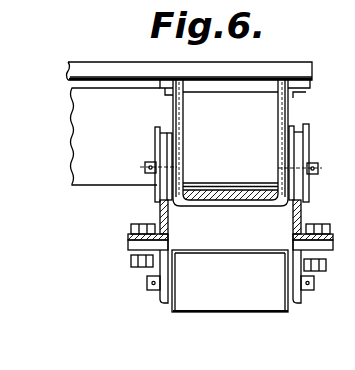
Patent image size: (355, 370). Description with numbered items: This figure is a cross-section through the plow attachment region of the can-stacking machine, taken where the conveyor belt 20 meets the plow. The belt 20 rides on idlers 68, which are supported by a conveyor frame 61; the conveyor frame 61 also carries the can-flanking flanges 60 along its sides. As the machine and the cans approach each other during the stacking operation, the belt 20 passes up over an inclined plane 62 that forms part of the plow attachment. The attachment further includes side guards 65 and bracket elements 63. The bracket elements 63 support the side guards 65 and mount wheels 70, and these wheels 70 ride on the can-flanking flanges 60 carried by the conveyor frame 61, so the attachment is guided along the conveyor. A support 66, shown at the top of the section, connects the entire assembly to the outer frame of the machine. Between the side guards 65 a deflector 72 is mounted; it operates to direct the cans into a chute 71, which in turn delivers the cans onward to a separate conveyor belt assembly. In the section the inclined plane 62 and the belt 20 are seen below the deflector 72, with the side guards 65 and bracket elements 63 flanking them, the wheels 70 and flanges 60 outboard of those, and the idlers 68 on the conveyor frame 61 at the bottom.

The support 66 is at (153, 69).
The side guards 65 is at (173, 108).
The bracket elements 63 is at (288, 107).
The deflector 72 is at (230, 143).
The belt 20 is at (210, 186).
The wheels 70 is at (155, 143).
The can-flanking flanges 60 is at (303, 212).
The chute 71 is at (100, 190).
The inclined plane 62 is at (240, 193).
The conveyor frame 61 is at (300, 303).
The idlers 68 is at (245, 293).